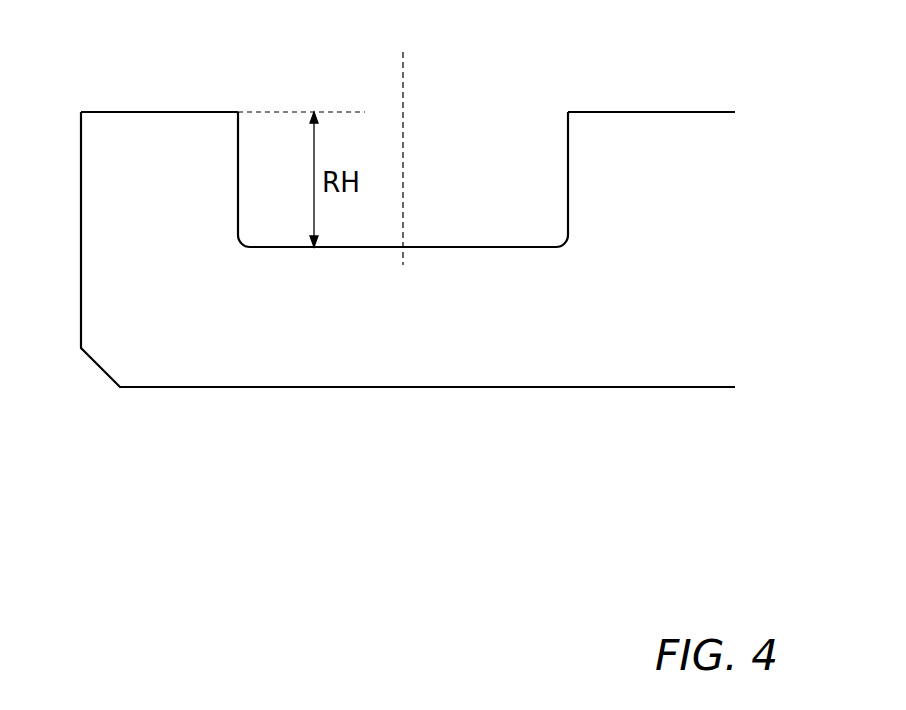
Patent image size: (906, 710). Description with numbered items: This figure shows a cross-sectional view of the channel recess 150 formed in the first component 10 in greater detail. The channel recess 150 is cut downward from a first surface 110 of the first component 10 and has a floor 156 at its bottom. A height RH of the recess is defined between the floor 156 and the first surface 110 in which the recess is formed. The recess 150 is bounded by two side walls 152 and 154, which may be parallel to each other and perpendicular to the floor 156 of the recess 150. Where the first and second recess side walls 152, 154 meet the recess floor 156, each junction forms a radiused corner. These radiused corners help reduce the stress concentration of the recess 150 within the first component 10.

The first component 10 is at (234, 372).
The first surface 110 is at (170, 112).
The channel recess 150 is at (457, 163).
The first recess side wall 152 is at (240, 202).
The second recess side wall 154 is at (567, 180).
The recess floor 156 is at (527, 245).